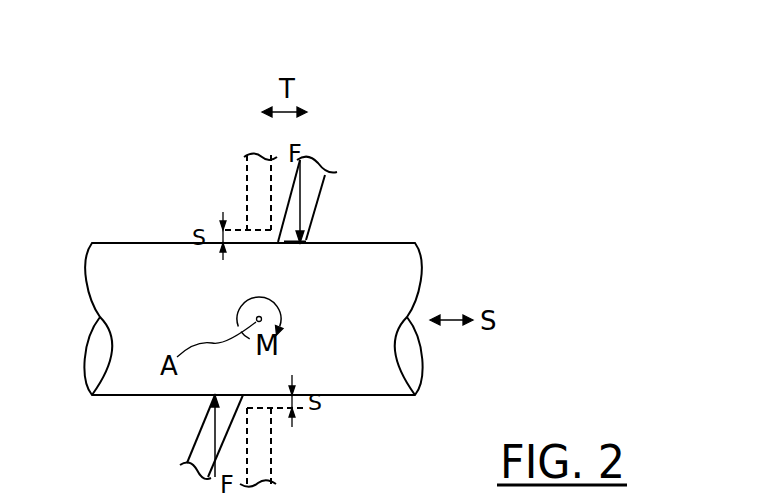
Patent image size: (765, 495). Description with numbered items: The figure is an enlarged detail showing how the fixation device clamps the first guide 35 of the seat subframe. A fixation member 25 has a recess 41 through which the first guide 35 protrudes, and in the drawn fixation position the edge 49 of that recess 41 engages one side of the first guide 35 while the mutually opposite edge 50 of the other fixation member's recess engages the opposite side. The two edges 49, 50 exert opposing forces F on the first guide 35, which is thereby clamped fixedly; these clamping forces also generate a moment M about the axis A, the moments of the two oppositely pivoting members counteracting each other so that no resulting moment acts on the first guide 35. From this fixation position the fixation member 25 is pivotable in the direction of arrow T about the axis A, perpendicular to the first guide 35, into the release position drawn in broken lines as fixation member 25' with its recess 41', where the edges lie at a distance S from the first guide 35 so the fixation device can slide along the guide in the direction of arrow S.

The fixation member 25 is at (348, 194).
The fixation member in release position 25' is at (209, 191).
The first guide 35 is at (360, 373).
The recess 41 is at (322, 280).
The recess in release position 41' is at (212, 289).
The edge 49 is at (307, 238).
The edge 50 is at (212, 400).